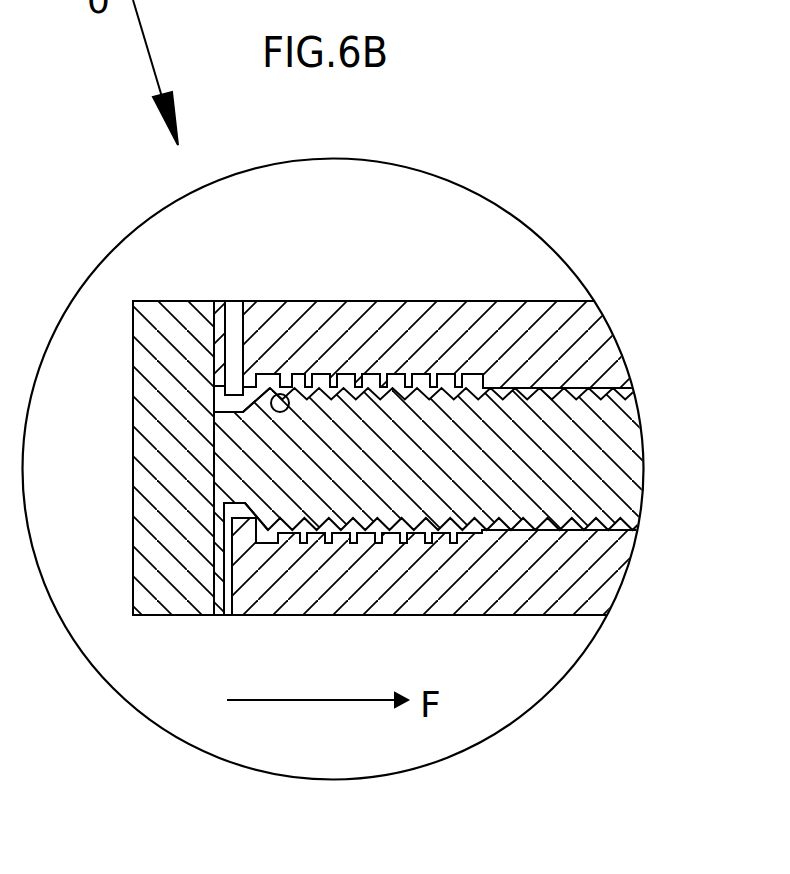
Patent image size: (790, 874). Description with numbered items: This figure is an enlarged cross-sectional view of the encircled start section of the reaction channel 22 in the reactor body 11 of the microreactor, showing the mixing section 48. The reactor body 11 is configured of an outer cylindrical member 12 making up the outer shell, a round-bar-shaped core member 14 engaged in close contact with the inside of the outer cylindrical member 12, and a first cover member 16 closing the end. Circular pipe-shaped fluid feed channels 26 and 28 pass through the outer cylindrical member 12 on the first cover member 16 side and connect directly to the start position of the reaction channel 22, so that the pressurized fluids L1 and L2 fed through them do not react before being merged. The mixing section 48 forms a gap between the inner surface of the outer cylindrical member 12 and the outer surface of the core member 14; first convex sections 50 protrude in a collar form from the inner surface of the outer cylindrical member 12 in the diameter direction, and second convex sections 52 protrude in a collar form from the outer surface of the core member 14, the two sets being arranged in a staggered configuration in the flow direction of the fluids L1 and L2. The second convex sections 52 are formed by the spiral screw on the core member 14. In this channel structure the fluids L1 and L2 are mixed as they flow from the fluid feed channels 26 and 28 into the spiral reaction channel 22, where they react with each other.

The reactor body 11 is at (513, 290).
The outer cylindrical member 12 is at (538, 313).
The core member 14 is at (415, 413).
The first cover member 16 is at (150, 420).
The reaction channel 22 is at (622, 370).
The fluid feed channel 26 is at (200, 300).
The fluid feed channel 28 is at (210, 602).
The mixing section 48 is at (397, 372).
The first convex sections 50 is at (385, 372).
The second convex sections 52 is at (290, 394).
The fluid L1 is at (233, 380).
The fluid L2 is at (232, 615).